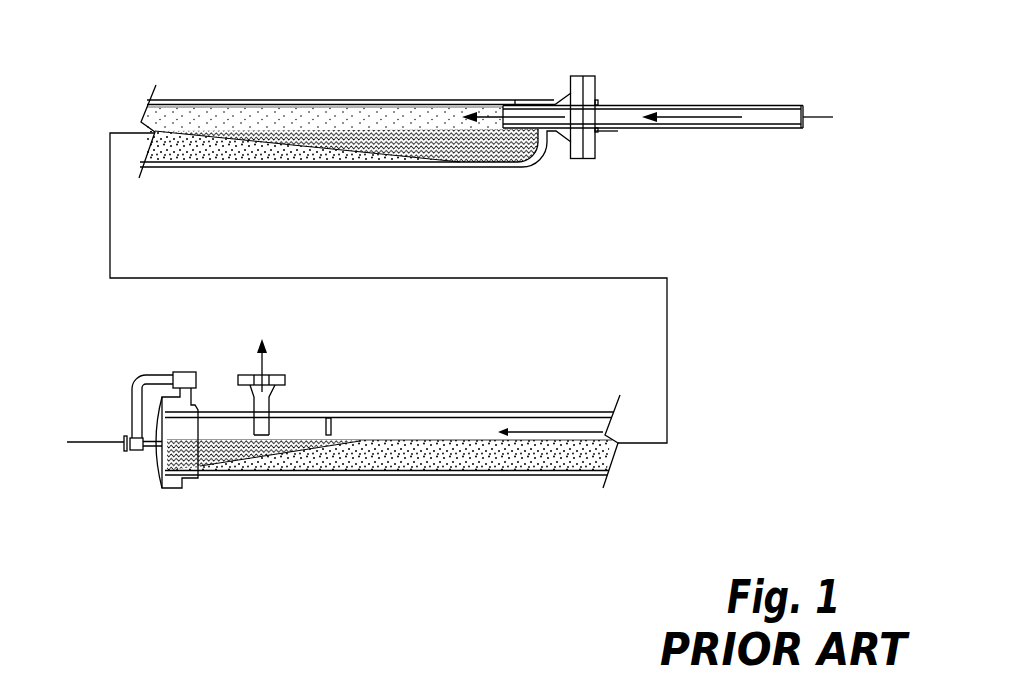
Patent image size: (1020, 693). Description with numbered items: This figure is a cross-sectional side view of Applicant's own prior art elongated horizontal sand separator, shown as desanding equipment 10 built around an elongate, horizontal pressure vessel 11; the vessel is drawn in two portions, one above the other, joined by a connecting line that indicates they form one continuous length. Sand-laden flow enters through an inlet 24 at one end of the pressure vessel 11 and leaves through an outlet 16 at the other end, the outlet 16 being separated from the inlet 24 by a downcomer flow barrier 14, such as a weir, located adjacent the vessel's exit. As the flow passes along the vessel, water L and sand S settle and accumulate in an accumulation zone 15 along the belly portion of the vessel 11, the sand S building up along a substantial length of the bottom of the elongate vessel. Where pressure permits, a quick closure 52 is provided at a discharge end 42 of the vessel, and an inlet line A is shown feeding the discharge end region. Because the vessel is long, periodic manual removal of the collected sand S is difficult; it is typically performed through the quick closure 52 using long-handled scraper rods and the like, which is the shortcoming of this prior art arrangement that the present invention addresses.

The desanding equipment 10 is at (476, 76).
The pressure vessel 11 is at (342, 100).
The inlet 24 is at (632, 106).
The accumulation zone 15 is at (147, 150).
The downcomer flow barrier 14 is at (333, 428).
The outlet 16 is at (243, 373).
The discharge end 42 is at (155, 455).
The quick closure 52 is at (157, 473).
The inlet line A is at (103, 442).
The sand S is at (277, 143).
The water L is at (490, 155).